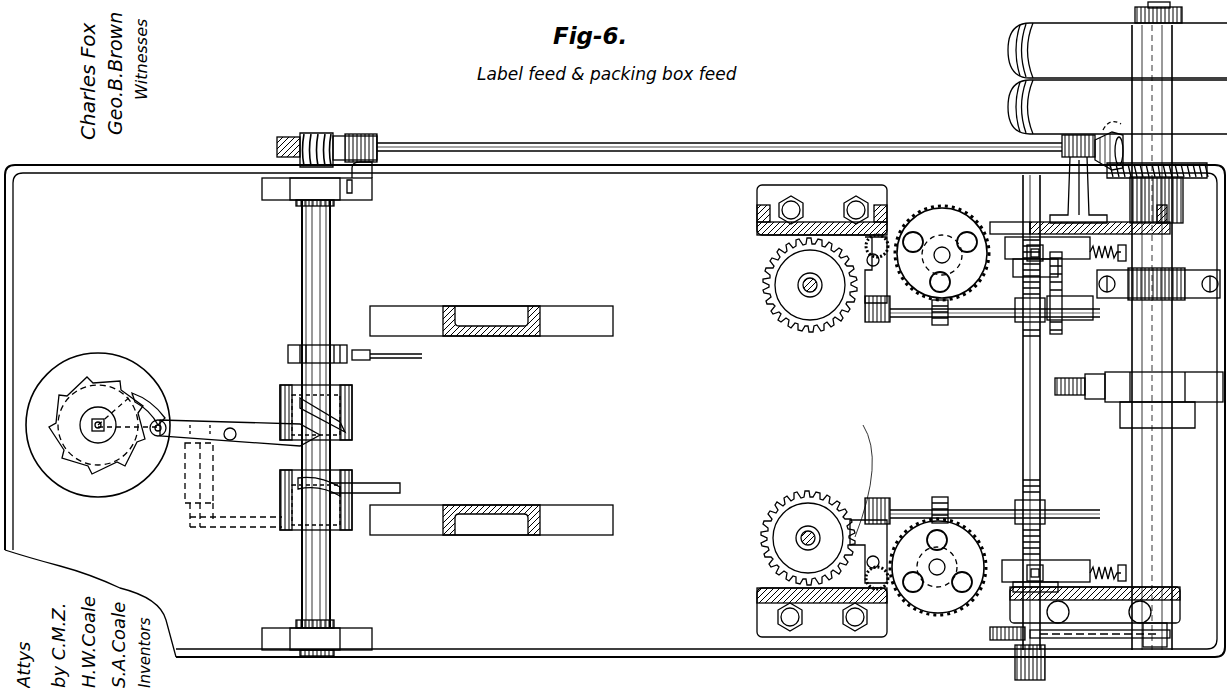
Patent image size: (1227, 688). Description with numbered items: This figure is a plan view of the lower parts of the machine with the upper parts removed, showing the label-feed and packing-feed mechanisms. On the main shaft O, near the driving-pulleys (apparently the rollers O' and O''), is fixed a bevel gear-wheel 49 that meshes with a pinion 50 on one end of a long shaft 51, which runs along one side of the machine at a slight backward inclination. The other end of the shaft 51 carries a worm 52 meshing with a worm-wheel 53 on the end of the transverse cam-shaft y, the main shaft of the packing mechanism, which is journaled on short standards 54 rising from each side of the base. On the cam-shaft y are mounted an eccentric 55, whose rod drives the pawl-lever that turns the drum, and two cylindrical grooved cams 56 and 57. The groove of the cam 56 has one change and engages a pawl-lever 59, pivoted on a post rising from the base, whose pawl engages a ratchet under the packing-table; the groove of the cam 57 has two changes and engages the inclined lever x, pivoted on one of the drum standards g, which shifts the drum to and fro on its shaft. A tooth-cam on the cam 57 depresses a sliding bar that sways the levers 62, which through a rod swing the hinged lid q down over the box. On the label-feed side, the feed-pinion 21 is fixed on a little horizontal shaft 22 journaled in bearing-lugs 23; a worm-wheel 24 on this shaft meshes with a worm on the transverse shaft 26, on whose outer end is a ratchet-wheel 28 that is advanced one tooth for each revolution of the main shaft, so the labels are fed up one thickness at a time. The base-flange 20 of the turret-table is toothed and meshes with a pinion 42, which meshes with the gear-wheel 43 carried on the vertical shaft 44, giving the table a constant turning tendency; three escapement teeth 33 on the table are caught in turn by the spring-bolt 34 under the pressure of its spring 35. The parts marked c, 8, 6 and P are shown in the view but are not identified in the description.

The transverse cam-shaft y is at (306, 414).
The short standards 54 is at (317, 417).
The worm 52 is at (316, 133).
The worm-wheel 53 is at (272, 147).
The long shaft 51 is at (836, 143).
The eccentric 55 is at (344, 354).
The cylindrical grooved cam 56 is at (326, 412).
The cylindrical grooved cam 57 is at (282, 484).
The inclined lever x is at (371, 491).
The pawl-lever 59 is at (240, 424).
The levers 62 is at (158, 414).
The standards of the drum g is at (491, 420).
The bearing block c is at (968, 612).
The gear-wheel 43 is at (809, 411).
The vertical shaft 44 is at (800, 411).
The pinion 42 is at (870, 303).
The bearing-lugs 23 is at (880, 322).
The horizontal pinion-shaft 22 is at (973, 318).
The feed-pinion 21 is at (940, 325).
The worm-wheel 24 is at (1020, 322).
The transverse worm-shaft 26 is at (1021, 412).
The spring-bolt 34 is at (1010, 240).
The spring 35 is at (1106, 566).
The base-flange 20 is at (920, 213).
The escapement teeth 33 is at (988, 262).
The hinged lid q is at (939, 415).
The holes 8 is at (940, 412).
The main shaft O is at (1157, 337).
The upper roller O'' is at (1117, 50).
The lower roller O' is at (1117, 107).
The pinion 50 is at (1095, 172).
The bevel gear-wheel 49 is at (1157, 163).
The bearing 6 is at (1158, 292).
The feed shaft P is at (1139, 393).
The ratchet-wheel 28 is at (998, 632).